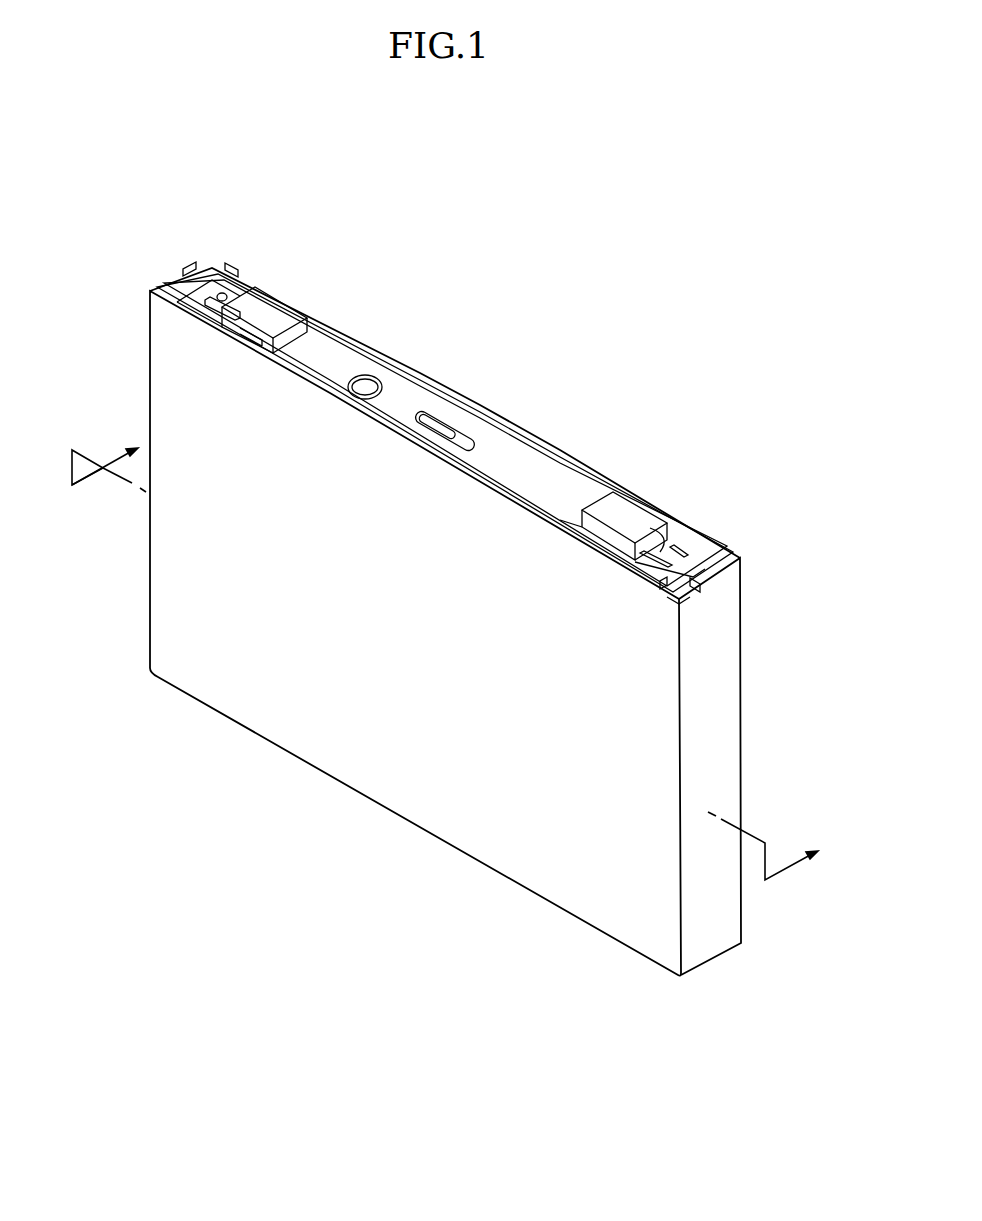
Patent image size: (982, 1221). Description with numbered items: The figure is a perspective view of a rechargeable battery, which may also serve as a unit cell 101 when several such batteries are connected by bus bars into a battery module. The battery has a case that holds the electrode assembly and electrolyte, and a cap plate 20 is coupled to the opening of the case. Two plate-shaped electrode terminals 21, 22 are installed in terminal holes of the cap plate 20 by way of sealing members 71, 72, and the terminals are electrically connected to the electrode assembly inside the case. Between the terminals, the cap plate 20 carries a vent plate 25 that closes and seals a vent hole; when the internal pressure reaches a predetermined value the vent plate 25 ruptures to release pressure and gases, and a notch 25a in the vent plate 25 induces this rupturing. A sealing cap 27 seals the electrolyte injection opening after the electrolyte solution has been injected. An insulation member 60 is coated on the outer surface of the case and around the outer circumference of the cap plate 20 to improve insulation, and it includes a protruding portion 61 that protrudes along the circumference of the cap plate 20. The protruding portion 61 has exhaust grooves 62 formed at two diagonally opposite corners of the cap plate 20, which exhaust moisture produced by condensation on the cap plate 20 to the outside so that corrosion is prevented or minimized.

The unit cell 101 is at (469, 232).
The cap plate 20 is at (513, 463).
The electrode terminal 21 is at (262, 302).
The electrode terminal 22 is at (625, 510).
The vent plate 25 is at (440, 418).
The notch 25a is at (455, 428).
The sealing cap 27 is at (367, 382).
The insulation member 60 is at (725, 680).
The protruding portion 61 is at (687, 528).
The exhaust groove 62 is at (205, 265).
The sealing member 71 is at (307, 338).
The sealing member 72 is at (577, 520).